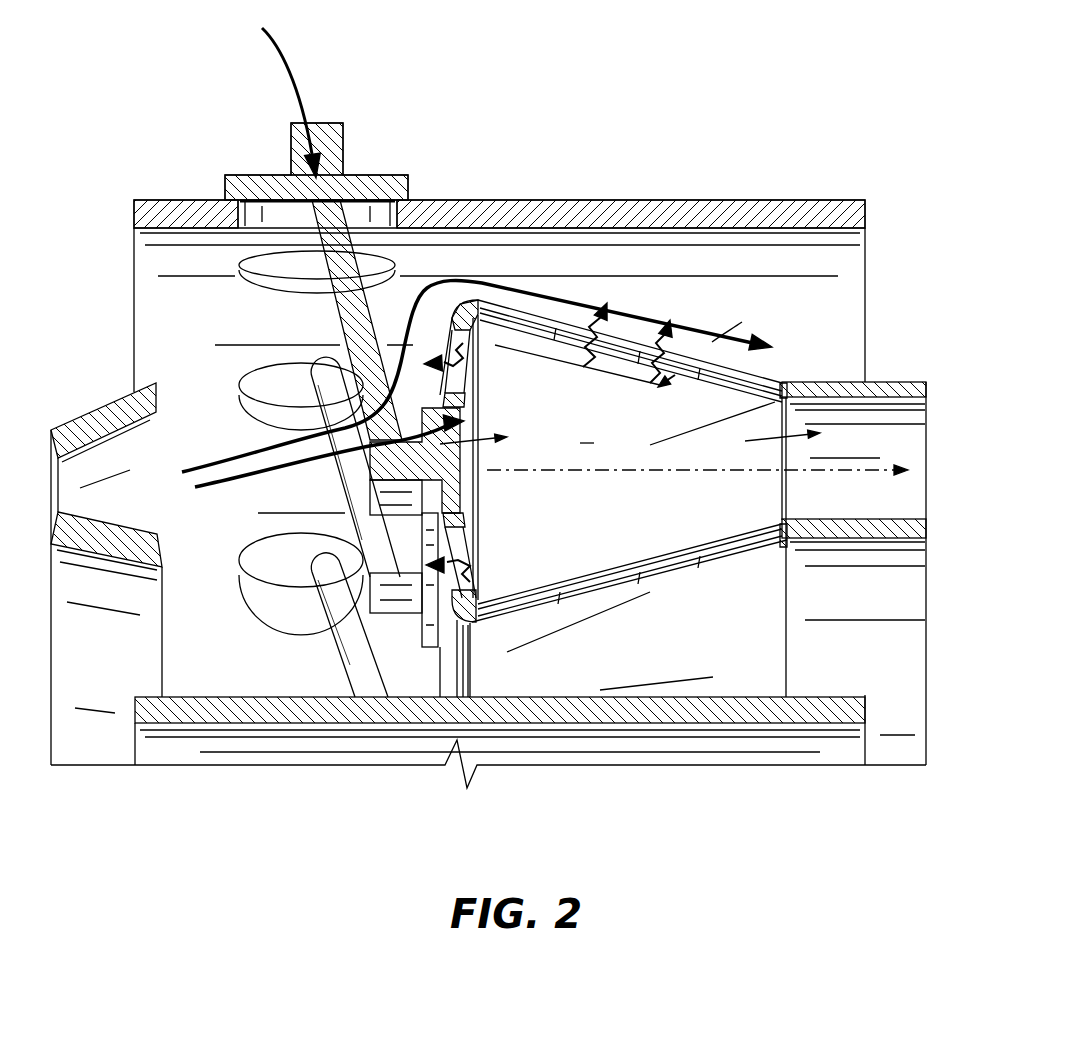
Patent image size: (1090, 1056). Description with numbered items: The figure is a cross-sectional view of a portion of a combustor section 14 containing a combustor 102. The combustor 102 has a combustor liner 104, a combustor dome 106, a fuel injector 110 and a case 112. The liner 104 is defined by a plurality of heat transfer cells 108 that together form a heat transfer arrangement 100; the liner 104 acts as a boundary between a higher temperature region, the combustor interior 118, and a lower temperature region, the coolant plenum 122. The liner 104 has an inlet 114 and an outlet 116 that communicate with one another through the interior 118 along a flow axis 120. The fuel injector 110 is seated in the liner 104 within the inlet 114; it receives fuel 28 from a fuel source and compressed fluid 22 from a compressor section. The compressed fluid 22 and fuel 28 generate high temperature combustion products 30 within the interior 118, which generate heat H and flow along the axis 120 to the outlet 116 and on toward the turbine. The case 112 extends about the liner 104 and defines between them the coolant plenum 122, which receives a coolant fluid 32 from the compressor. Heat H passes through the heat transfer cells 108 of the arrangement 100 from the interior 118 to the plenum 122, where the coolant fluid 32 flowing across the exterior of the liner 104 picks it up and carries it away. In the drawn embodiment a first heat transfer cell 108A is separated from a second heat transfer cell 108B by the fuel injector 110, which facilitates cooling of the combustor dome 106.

The combustor section 14 is at (166, 845).
The compressed fluid 22 is at (230, 478).
The fuel 28 is at (308, 82).
The high temperature combustion products 30 is at (796, 436).
The coolant fluid 32 is at (557, 292).
The heat transfer arrangement 100 is at (714, 398).
The combustor 102 is at (412, 668).
The combustor liner 104 is at (656, 604).
The combustor dome 106 is at (462, 620).
The heat transfer cells 108 is at (660, 380).
The first heat transfer cell 108A is at (458, 350).
The second heat transfer cell 108B is at (458, 549).
The fuel injector 110 is at (353, 330).
The case 112 is at (240, 708).
The inlet 114 is at (405, 470).
The outlet 116 is at (927, 436).
The combustor interior 118 is at (580, 492).
The flow axis 120 is at (842, 602).
The coolant plenum 122 is at (640, 274).